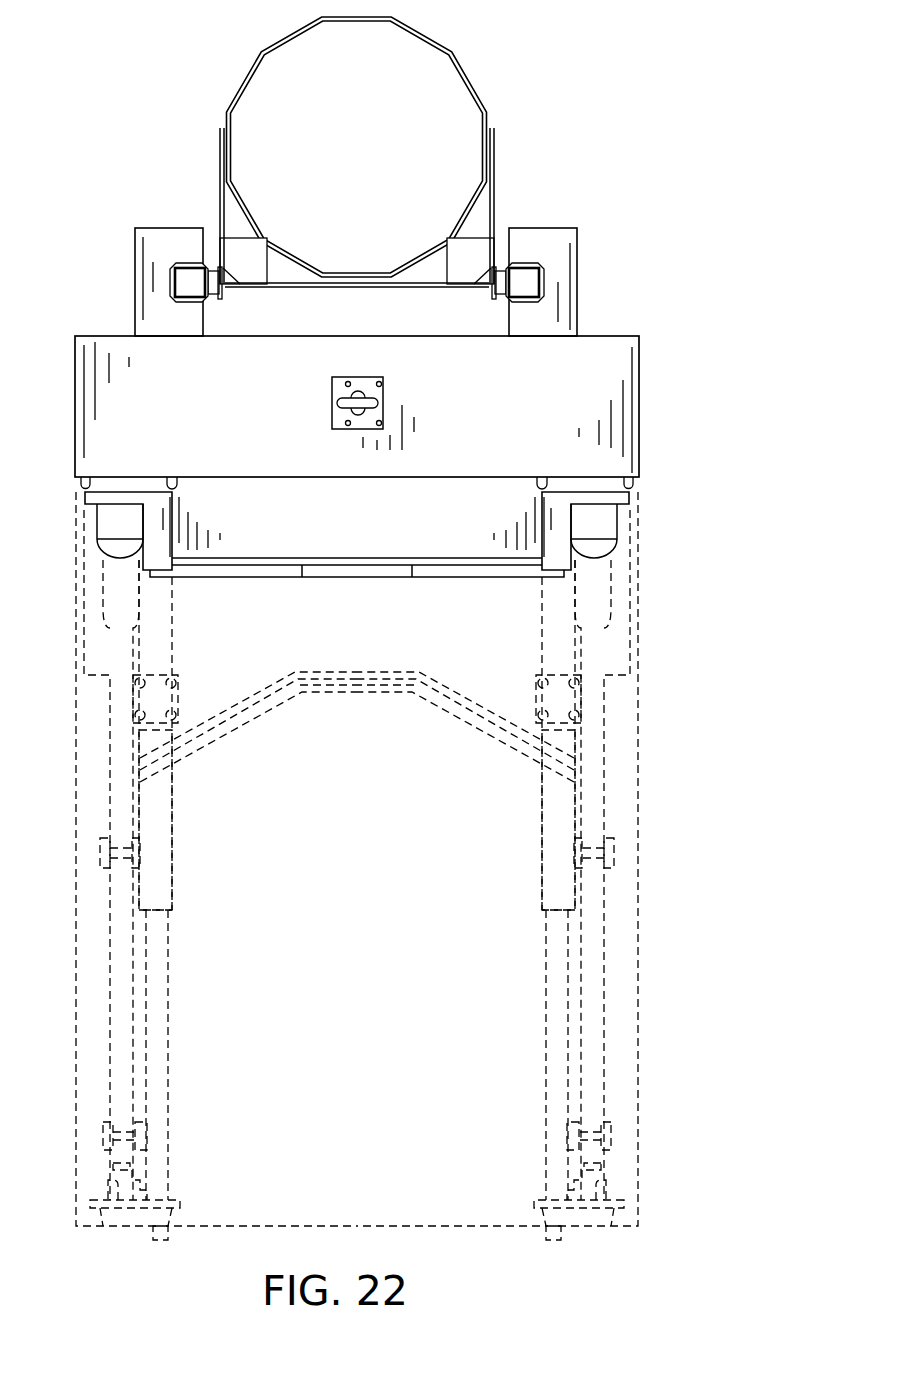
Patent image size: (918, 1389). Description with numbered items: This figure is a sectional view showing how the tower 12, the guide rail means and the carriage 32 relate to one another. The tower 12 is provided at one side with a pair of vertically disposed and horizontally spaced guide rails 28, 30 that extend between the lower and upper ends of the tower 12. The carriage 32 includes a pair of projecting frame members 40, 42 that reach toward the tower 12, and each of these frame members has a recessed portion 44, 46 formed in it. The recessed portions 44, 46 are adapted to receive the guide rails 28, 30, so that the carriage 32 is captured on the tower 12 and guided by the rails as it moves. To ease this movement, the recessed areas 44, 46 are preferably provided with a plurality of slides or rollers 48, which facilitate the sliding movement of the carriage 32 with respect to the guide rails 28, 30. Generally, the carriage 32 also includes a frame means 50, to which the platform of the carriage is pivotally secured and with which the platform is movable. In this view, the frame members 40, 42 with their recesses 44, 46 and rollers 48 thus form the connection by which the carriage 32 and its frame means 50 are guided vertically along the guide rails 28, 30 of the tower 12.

The tower 12 is at (490, 96).
The guide rail 28 is at (191, 278).
The guide rail 30 is at (527, 285).
The carriage 32 is at (646, 358).
The projecting frame member 40 is at (135, 270).
The projecting frame member 42 is at (557, 226).
The recessed portion 44 is at (172, 297).
The recessed portion 46 is at (497, 300).
The slides or rollers 48 is at (521, 262).
The frame means 50 is at (646, 445).